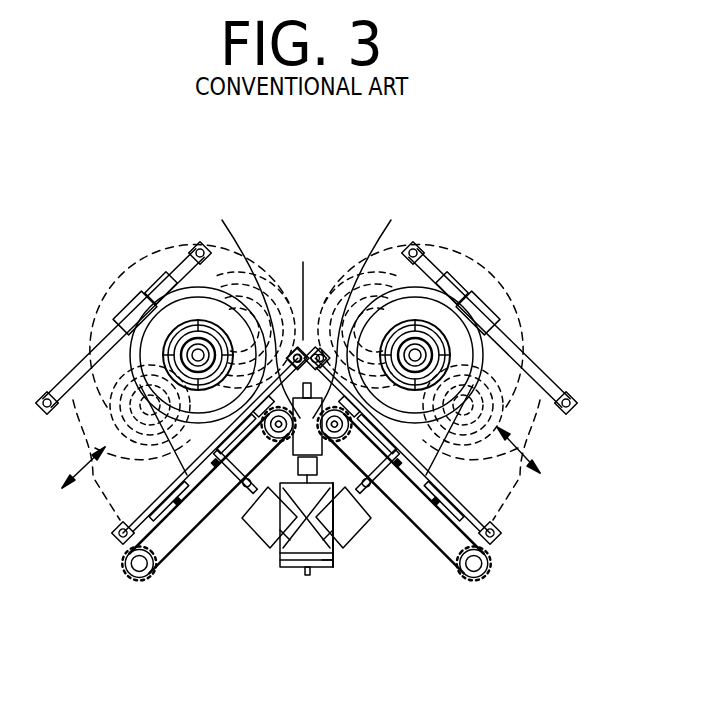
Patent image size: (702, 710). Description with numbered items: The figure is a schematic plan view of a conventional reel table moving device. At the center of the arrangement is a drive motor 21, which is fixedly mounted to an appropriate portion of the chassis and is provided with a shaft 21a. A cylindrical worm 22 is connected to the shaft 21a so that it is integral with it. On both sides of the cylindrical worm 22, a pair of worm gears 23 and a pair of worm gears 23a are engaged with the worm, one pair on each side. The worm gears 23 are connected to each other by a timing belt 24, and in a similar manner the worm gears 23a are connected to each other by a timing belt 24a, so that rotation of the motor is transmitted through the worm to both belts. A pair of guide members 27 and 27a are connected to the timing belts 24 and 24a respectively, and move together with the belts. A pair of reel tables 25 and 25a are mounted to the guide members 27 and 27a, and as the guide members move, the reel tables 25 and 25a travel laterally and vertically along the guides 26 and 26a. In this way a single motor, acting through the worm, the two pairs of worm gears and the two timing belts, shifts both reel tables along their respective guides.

The drive motor 21 is at (285, 570).
The shaft 21a is at (334, 565).
The cylindrical worm 22 is at (303, 262).
The worm gears 23 is at (250, 262).
The worm gears 23a is at (345, 355).
The timing belt 24 is at (196, 560).
The timing belt 24a is at (427, 560).
The reel table 25 is at (138, 367).
The reel table 25a is at (492, 357).
The guide 26 is at (167, 283).
The guide 26a is at (453, 292).
The guide member 27 is at (243, 555).
The guide member 27a is at (380, 560).